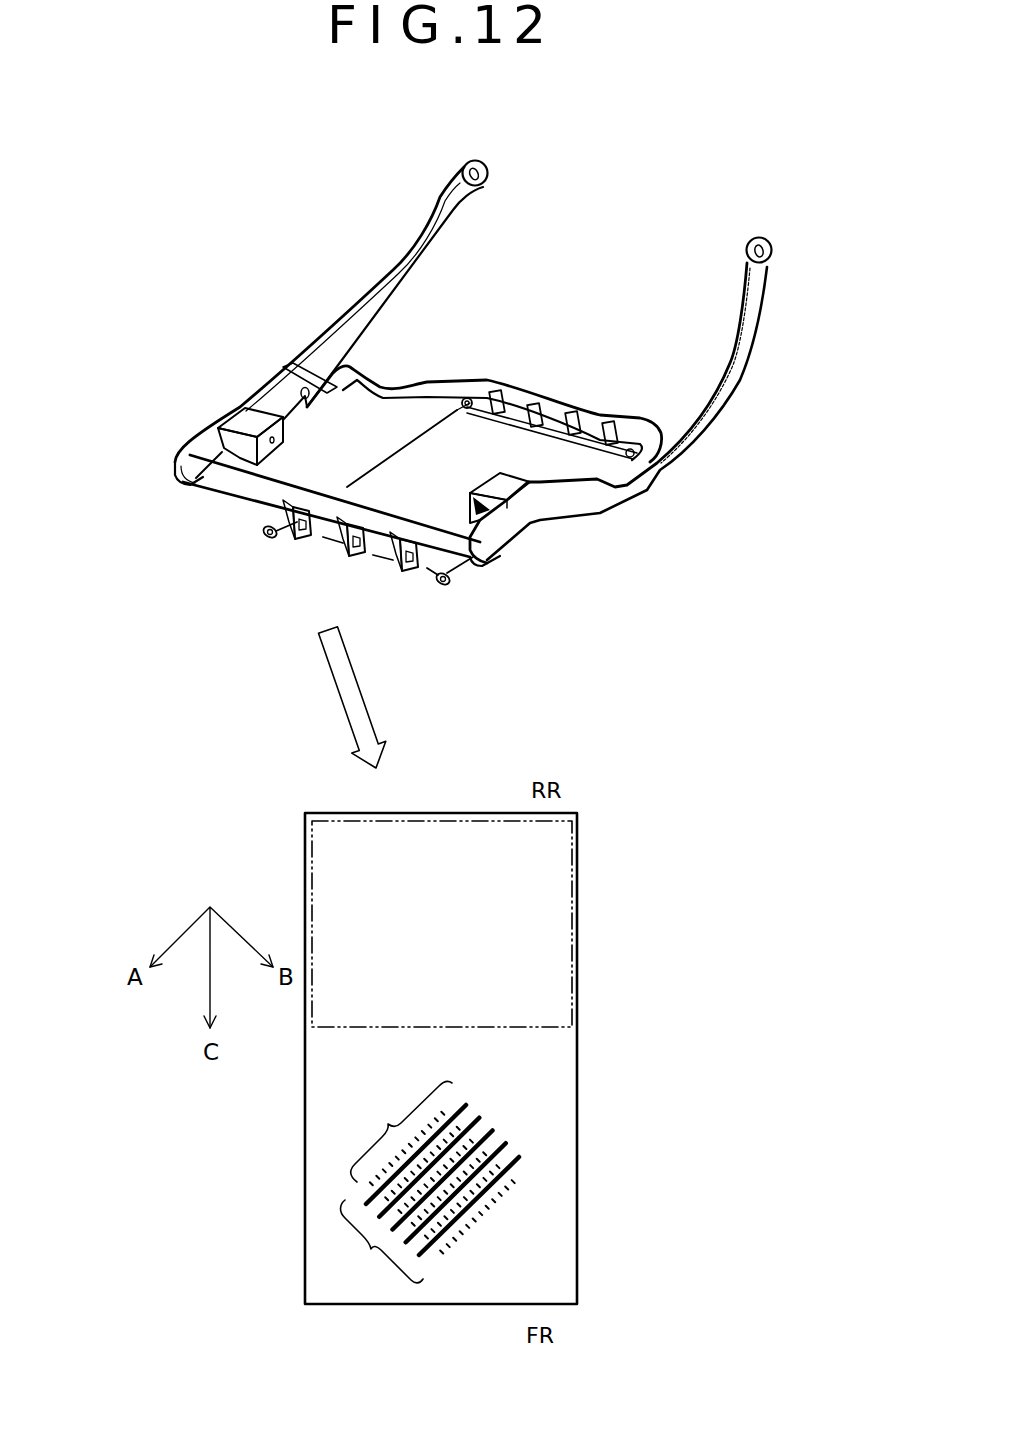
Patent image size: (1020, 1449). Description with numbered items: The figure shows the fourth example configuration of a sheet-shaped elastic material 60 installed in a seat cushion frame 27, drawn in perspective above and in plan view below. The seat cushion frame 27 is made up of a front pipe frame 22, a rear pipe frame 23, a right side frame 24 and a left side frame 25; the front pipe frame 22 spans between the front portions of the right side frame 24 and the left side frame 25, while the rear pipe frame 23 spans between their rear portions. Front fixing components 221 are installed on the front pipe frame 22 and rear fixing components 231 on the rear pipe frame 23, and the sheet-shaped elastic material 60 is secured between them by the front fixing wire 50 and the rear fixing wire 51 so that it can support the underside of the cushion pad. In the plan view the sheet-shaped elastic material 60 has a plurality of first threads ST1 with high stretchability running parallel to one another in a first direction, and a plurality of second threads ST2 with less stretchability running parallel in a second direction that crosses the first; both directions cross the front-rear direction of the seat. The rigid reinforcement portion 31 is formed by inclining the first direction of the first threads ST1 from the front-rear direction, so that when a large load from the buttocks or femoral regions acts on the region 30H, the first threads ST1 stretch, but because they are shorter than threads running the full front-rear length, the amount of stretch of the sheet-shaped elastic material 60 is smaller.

The seat cushion frame 27 is at (405, 135).
The right side frame 24 is at (400, 293).
The left side frame 25 is at (740, 327).
The front pipe frame 22 is at (205, 473).
The rear pipe frame 23 is at (484, 545).
The rear fixing components 231 is at (497, 397).
The rear fixing wire 51 is at (468, 400).
The rigid reinforcement portion 31 is at (430, 448).
The sheet-shaped elastic material 60 is at (336, 652).
The front fixing wire 50 is at (264, 531).
The front fixing components 221 is at (303, 538).
The region 30H is at (572, 913).
The first threads ST1 is at (427, 1194).
The second threads ST2 is at (401, 1131).